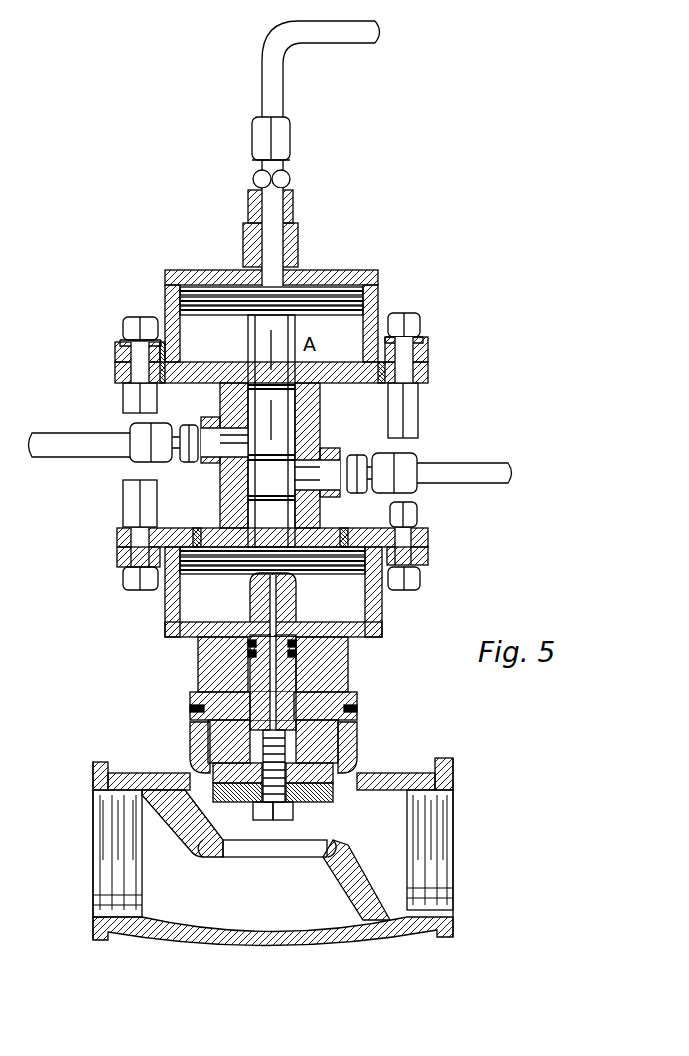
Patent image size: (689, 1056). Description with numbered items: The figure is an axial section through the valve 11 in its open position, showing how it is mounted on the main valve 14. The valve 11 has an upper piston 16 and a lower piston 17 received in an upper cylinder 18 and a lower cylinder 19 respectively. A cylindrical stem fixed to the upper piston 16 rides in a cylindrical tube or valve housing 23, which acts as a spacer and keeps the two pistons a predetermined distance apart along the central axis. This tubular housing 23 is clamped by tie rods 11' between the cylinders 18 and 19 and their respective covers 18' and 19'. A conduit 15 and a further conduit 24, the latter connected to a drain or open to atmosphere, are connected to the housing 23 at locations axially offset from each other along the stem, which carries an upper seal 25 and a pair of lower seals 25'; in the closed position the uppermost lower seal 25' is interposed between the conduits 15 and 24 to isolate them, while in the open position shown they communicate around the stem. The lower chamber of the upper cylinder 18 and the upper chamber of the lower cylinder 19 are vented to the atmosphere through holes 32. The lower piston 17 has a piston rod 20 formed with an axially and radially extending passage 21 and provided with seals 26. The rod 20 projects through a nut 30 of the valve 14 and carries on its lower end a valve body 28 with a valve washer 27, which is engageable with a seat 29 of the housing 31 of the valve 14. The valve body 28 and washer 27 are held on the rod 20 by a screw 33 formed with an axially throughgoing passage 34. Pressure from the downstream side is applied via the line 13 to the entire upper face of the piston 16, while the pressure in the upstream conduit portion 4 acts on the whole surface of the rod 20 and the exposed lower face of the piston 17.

The upstream conduit portion 4 is at (160, 893).
The valve 11 is at (305, 290).
The tie rods 11' is at (281, 455).
The line 13 is at (280, 77).
The valve 14 is at (333, 820).
The conduit 15 is at (510, 468).
The upper piston 16 is at (372, 292).
The lower piston 17 is at (422, 565).
The upper cylinder 18 is at (312, 327).
The upper cover 18' is at (313, 360).
The lower cylinder 19 is at (329, 593).
The lower cover 19' is at (309, 534).
The piston rod 20 is at (205, 676).
The passage 21 is at (193, 701).
The cylindrical tube or valve housing 23 is at (320, 432).
The further conduit 24 is at (100, 435).
The upper seal 25 is at (311, 431).
The lower seals 25' is at (254, 459).
The seals 26 is at (245, 660).
The valve washer 27 is at (200, 780).
The valve body 28 is at (190, 775).
The seat 29 is at (335, 838).
The nut 30 is at (345, 672).
The housing 31 is at (423, 773).
The holes 32 is at (163, 338).
The screw 33 is at (257, 830).
The passage 34 is at (287, 830).